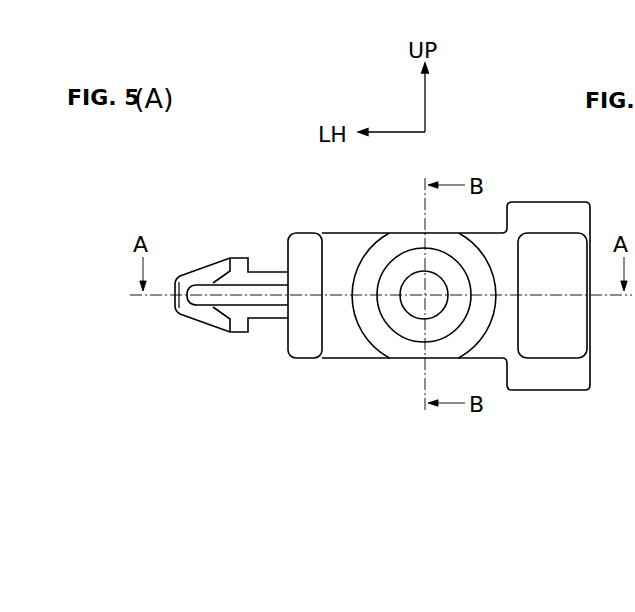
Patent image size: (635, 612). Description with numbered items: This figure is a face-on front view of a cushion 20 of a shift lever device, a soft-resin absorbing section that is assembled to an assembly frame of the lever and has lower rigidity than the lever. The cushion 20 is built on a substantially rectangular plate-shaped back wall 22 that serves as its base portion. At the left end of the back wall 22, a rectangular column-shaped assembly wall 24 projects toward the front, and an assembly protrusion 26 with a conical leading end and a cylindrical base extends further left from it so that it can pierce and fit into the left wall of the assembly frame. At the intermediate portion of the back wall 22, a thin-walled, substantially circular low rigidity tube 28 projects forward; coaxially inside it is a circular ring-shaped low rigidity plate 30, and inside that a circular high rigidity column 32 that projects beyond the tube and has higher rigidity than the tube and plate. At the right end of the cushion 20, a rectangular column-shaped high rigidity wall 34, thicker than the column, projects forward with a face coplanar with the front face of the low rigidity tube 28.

The cushion 20 is at (306, 176).
The back wall 22 is at (348, 242).
The assembly wall 24 is at (301, 241).
The assembly protrusion 26 is at (208, 263).
The low rigidity tube 28 is at (397, 247).
The low rigidity plate 30 is at (452, 269).
The high rigidity column 32 is at (415, 306).
The high rigidity wall 34 is at (558, 245).